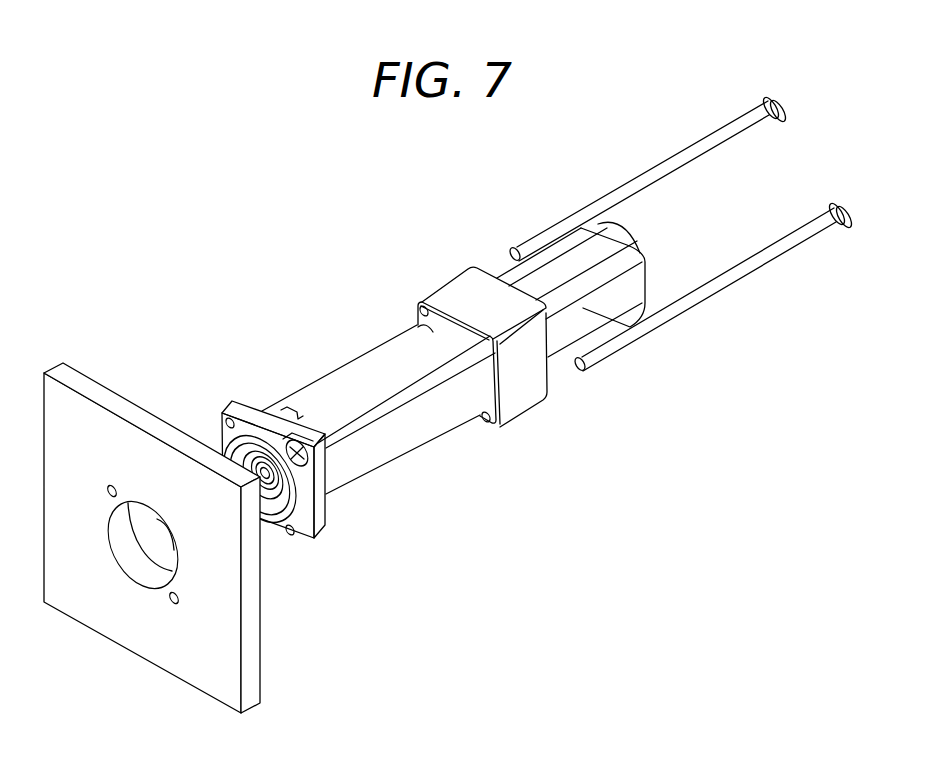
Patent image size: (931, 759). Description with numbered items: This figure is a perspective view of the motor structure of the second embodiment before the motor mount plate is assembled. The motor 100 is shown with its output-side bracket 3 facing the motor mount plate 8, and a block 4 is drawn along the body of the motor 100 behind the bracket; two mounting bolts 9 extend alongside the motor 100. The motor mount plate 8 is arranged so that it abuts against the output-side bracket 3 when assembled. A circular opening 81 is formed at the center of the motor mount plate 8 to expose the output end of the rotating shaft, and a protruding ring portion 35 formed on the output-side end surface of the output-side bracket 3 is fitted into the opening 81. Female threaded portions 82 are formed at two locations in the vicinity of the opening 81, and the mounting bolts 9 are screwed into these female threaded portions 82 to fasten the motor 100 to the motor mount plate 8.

The motor 100 is at (351, 355).
The output-side bracket 3 is at (247, 408).
The protruding ring portion 35 is at (227, 447).
The gearbox block 4 is at (462, 290).
The motor mount plate 8 is at (115, 402).
The circular opening 81 is at (141, 586).
The female threaded portions 82 is at (118, 493).
The mounting bolts 9 is at (638, 185).